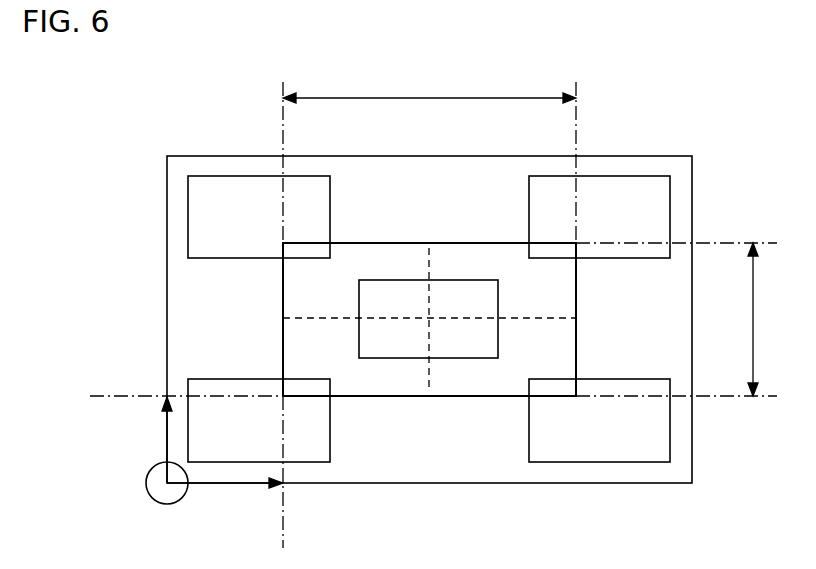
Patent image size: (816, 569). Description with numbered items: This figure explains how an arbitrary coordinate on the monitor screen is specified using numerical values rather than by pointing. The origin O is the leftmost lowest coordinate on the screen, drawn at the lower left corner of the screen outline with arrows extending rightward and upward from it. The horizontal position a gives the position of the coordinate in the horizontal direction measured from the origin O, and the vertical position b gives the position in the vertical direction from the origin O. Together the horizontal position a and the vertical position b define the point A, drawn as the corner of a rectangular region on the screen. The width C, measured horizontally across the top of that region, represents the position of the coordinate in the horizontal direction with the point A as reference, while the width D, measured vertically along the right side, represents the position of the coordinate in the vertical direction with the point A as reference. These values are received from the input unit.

The point A is at (283, 397).
The width C is at (429, 85).
The width D is at (761, 319).
The origin O is at (165, 496).
The horizontal position a is at (225, 493).
The vertical position b is at (158, 440).